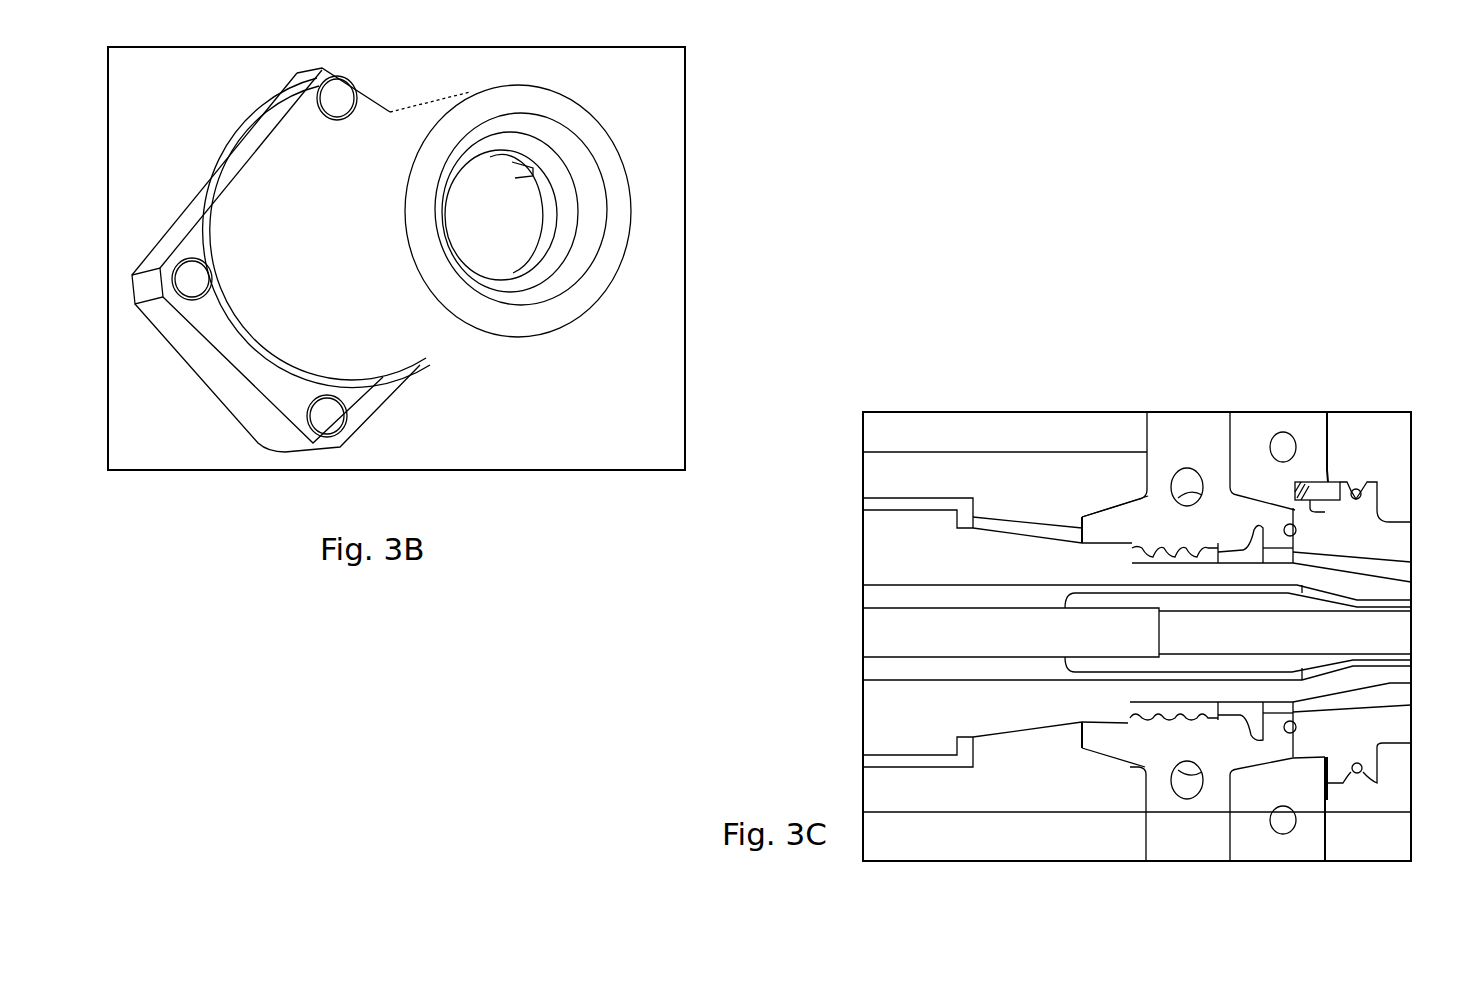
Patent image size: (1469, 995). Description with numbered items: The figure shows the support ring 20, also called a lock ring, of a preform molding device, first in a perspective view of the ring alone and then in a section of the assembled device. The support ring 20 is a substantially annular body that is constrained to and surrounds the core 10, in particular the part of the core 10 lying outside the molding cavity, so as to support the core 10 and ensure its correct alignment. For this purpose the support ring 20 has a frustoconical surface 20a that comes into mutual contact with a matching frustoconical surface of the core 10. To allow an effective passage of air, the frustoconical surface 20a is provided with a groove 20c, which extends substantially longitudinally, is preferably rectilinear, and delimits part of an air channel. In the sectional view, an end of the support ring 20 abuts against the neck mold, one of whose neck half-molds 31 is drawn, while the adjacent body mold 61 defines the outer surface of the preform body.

In FIG. 3C, the core 10 is at (882, 525).
In FIG. 3B, the support ring 20 is at (325, 347).
In FIG. 3C, the support ring 20 is at (1007, 483).
In FIG. 3B, the frustoconical surface 20a is at (547, 223).
In FIG. 3B, the groove 20c is at (537, 167).
In FIG. 3C, the groove 20c is at (1054, 535).
In FIG. 3C, the neck half-mold 31 is at (1202, 433).
In FIG. 3C, the body mold 61 is at (1367, 513).